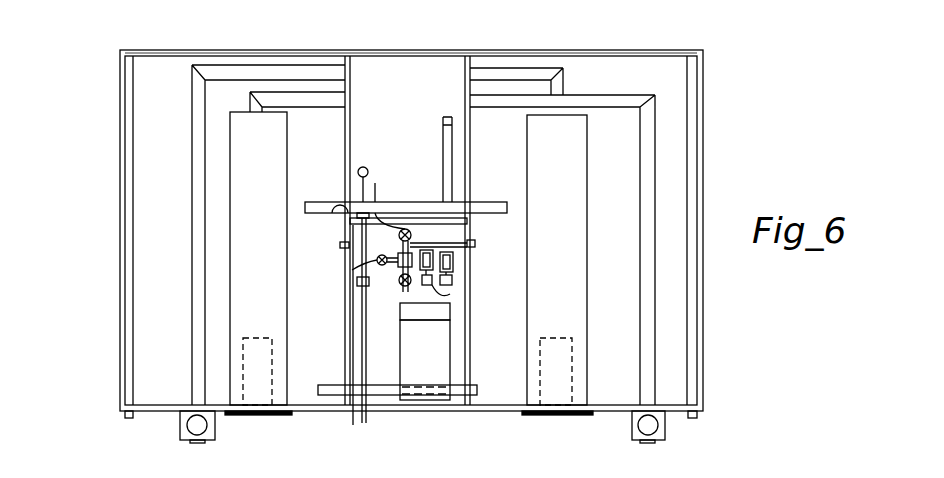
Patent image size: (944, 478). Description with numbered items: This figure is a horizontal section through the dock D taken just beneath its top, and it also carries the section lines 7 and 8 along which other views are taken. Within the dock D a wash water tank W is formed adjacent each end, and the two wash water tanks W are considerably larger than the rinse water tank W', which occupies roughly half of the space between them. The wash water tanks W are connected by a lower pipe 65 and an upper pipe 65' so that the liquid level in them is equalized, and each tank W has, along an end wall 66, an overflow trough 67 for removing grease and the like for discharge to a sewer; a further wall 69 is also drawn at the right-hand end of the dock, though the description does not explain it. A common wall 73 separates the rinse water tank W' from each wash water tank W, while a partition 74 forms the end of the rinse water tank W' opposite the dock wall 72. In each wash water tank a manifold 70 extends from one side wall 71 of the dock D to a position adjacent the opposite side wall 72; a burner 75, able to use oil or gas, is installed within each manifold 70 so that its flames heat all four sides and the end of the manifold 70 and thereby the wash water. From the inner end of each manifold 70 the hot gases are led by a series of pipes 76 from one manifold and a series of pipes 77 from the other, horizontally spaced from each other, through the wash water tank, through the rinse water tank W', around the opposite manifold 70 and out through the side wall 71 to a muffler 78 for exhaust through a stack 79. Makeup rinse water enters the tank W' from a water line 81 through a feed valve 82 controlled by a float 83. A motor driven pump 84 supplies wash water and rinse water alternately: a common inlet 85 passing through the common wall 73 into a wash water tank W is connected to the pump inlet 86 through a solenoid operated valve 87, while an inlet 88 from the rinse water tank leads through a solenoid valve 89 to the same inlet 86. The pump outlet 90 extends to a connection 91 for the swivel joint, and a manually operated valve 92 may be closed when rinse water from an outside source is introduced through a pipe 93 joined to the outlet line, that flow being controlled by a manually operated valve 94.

The lower pipe 65 is at (403, 309).
The upper pipe 65' is at (500, 168).
The end wall 66 is at (122, 268).
The overflow trough 67 is at (135, 318).
The inner wall 69 is at (690, 280).
The manifold 70 is at (287, 150).
The side wall 71 is at (298, 412).
The side wall 72 is at (497, 52).
The common wall 73 is at (347, 130).
The partition 74 is at (428, 210).
The burner 75 is at (262, 338).
The series of pipes 76 is at (538, 70).
The series of pipes 77 is at (598, 100).
The muffler 78 is at (215, 425).
The stack 79 is at (188, 425).
The water line 81 is at (370, 400).
The feed valve 82 is at (336, 214).
The float 83 is at (365, 166).
The motor driven pump 84 is at (447, 338).
The common inlet 85 is at (340, 244).
The inlet 86 is at (446, 286).
The solenoid operated valve 87 is at (470, 276).
The inlet 88 is at (443, 143).
The solenoid valve 89 is at (470, 262).
The pump outlet 90 is at (397, 292).
The connection 91 is at (368, 174).
The manually operated valve 92 is at (370, 282).
The pipe 93 is at (352, 352).
The manually operated valve 94 is at (340, 270).
The wash water tank W is at (409, 135).
The rinse water tank W' is at (415, 70).
The dock D is at (710, 362).
The section line 7- 7 is at (112, 217).
The section line 8- 8 is at (167, 52).